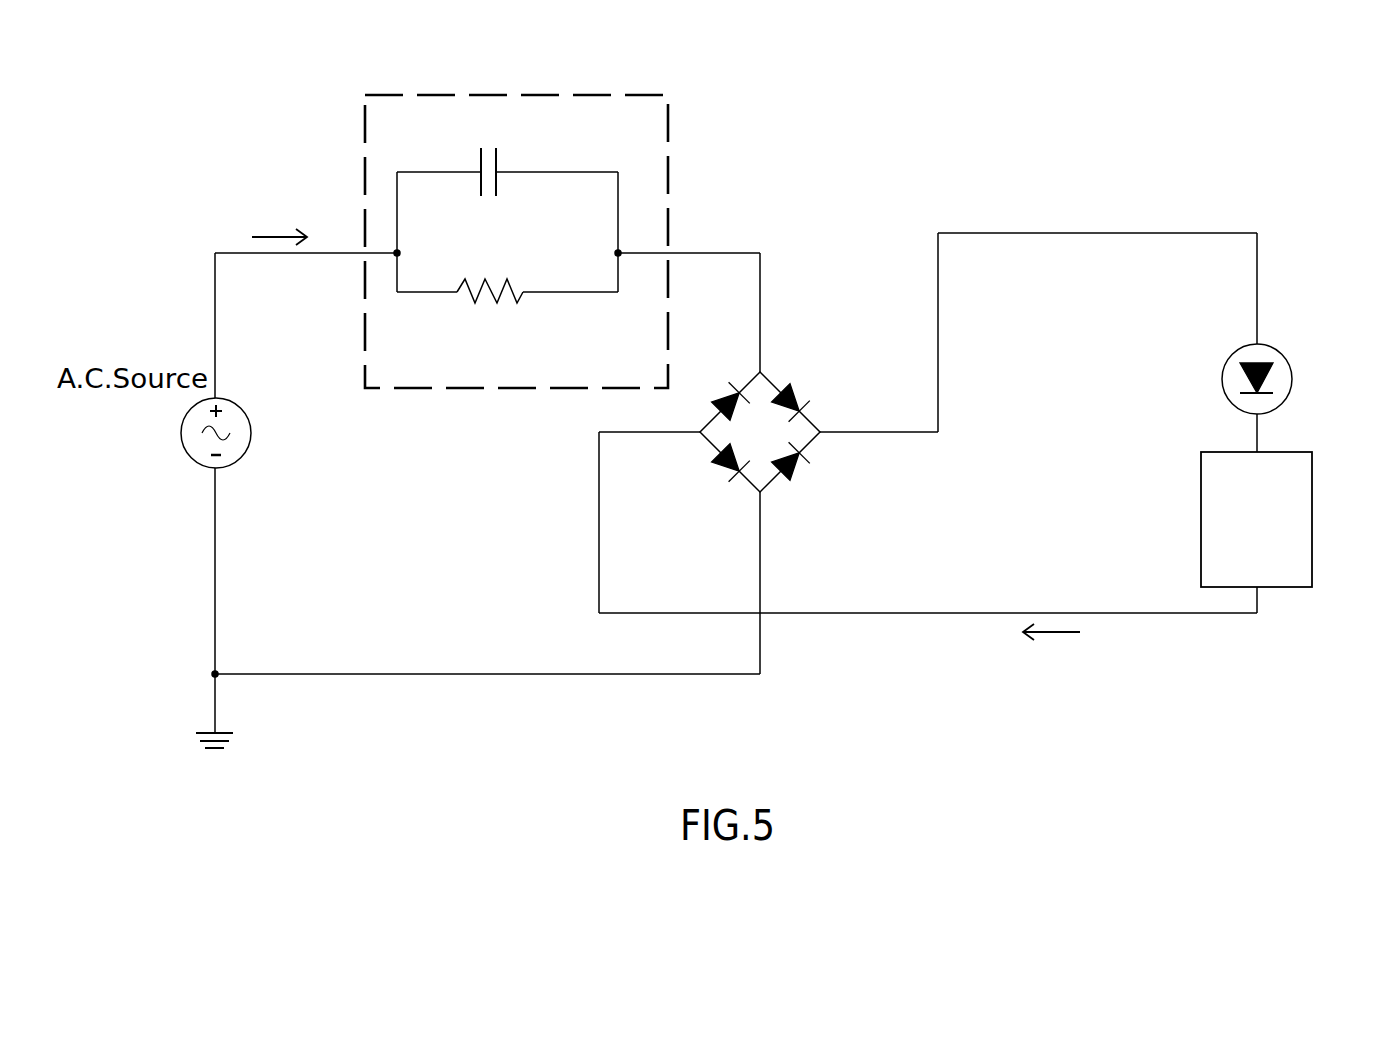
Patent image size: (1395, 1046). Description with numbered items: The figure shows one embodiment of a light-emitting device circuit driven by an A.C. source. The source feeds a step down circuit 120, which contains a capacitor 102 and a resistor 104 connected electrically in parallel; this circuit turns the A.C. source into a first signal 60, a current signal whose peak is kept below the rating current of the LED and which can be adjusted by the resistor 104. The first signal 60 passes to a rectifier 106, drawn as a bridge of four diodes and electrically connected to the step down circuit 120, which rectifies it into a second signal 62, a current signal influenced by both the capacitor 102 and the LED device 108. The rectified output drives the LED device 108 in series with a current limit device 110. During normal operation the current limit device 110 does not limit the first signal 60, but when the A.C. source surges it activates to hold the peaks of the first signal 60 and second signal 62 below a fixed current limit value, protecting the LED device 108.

The first signal 60 is at (274, 228).
The second signal 62 is at (1060, 636).
The capacitor 102 is at (504, 166).
The resistor 104 is at (484, 300).
The rectifier 106 is at (774, 368).
The LED device 108 is at (1274, 344).
The current limit device 110 is at (1312, 524).
The step down circuit 120 is at (566, 241).